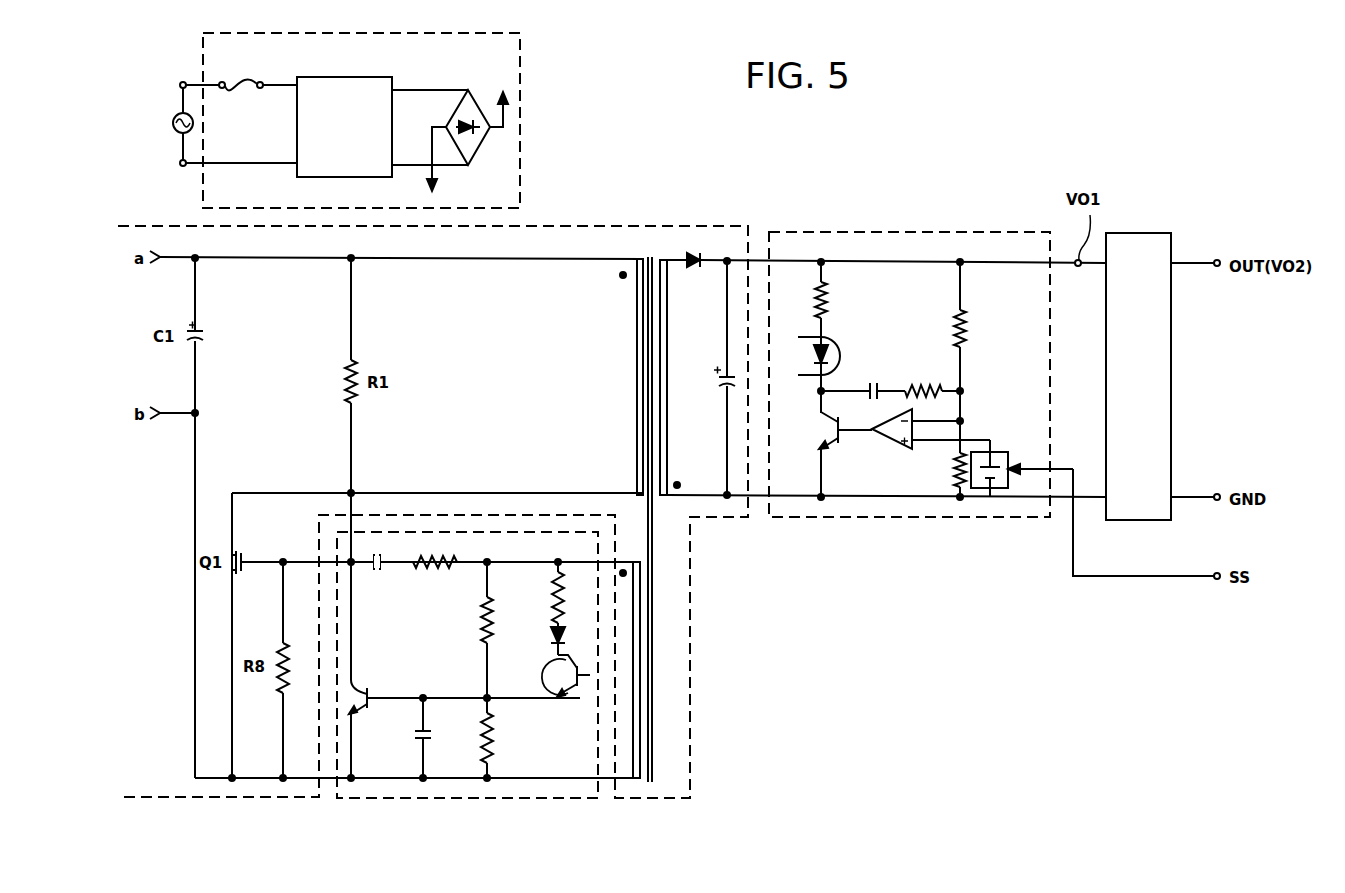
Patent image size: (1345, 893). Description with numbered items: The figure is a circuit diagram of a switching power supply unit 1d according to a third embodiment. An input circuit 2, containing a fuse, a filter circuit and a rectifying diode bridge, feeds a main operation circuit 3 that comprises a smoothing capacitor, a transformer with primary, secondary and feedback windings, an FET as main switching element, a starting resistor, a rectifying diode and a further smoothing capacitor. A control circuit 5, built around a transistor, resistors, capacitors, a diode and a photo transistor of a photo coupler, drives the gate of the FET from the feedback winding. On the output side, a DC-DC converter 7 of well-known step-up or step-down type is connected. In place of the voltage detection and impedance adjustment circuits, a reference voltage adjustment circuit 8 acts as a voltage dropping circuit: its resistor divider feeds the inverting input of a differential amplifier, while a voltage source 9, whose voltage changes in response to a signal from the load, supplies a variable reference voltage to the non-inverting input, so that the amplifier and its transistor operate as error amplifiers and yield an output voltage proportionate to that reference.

The switching power supply unit 1d is at (1041, 165).
The input circuit 2 is at (512, 182).
The main operation circuit 3 is at (608, 236).
The control circuit 5 is at (473, 792).
The DC-DC converter 7 is at (1146, 245).
The reference voltage adjustment circuit 8 is at (842, 243).
The voltage source 9 is at (998, 497).